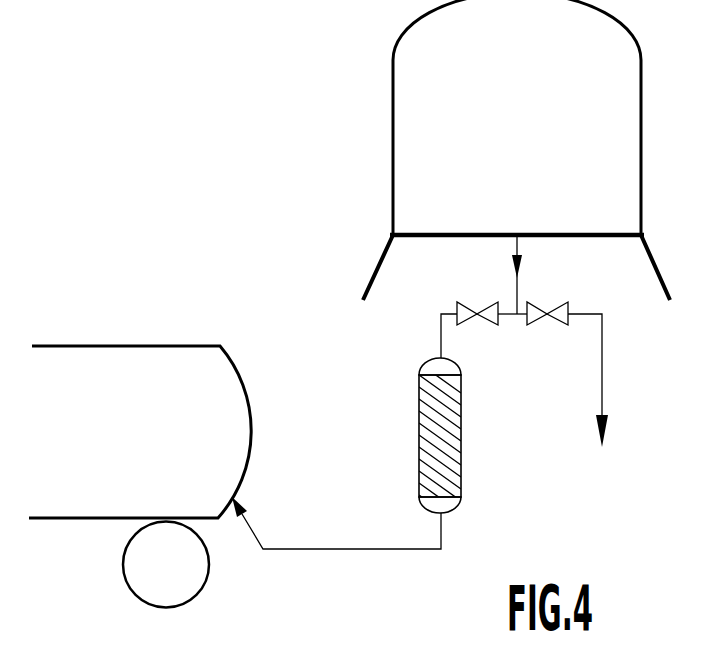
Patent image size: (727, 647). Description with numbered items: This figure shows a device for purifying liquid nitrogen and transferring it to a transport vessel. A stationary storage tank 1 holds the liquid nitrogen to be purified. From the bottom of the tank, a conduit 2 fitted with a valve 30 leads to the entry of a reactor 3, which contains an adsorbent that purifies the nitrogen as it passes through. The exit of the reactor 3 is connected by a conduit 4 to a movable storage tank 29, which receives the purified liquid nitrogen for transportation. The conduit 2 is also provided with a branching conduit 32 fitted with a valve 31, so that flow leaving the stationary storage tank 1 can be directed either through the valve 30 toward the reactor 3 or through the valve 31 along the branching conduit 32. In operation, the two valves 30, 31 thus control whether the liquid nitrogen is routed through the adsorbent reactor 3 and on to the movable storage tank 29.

The stationary storage tank 1 is at (392, 107).
The conduit 2 is at (448, 314).
The reactor 3 is at (462, 428).
The conduit 4 is at (348, 549).
The movable storage tank 29 is at (174, 346).
The valve 30 is at (469, 304).
The valve 31 is at (537, 304).
The branching conduit 32 is at (603, 363).